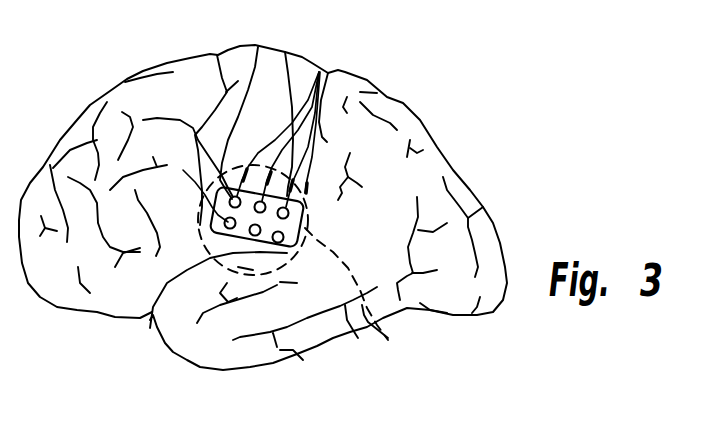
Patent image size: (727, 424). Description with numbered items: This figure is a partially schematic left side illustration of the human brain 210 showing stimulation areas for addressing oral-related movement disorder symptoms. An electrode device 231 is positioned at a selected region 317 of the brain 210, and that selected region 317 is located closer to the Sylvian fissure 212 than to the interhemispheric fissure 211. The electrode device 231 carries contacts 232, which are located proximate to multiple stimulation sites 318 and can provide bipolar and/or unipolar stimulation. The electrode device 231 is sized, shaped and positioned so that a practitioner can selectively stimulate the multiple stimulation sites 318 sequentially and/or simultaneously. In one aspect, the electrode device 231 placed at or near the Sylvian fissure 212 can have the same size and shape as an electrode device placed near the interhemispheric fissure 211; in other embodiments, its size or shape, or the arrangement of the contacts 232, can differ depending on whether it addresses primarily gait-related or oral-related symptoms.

The brain 210 is at (345, 203).
The interhemispheric fissure 211 is at (263, 207).
The Sylvian fissure 212 is at (260, 297).
The electrode device 231 is at (192, 309).
The contacts 232 is at (135, 148).
The selected region 317 is at (320, 266).
The stimulation sites 318 is at (287, 110).